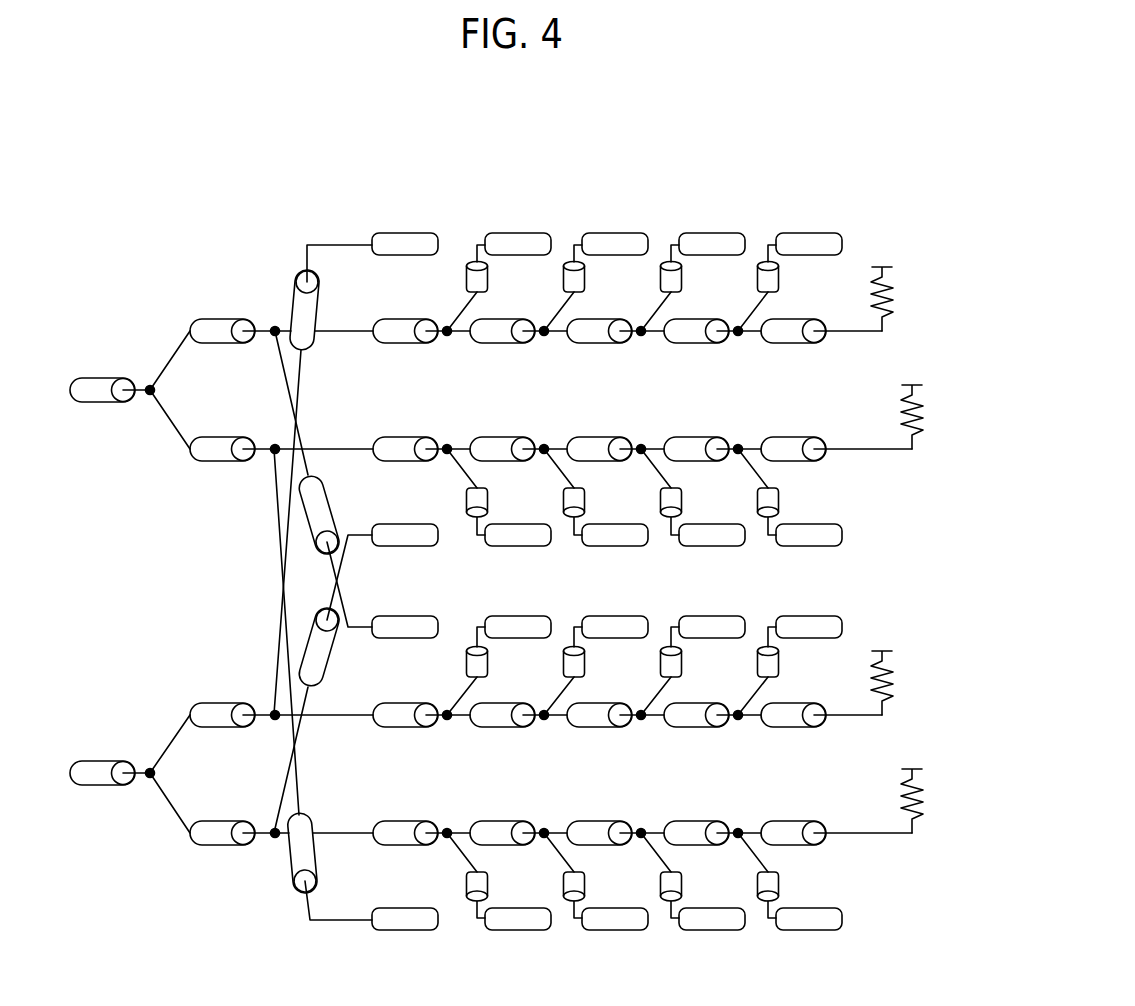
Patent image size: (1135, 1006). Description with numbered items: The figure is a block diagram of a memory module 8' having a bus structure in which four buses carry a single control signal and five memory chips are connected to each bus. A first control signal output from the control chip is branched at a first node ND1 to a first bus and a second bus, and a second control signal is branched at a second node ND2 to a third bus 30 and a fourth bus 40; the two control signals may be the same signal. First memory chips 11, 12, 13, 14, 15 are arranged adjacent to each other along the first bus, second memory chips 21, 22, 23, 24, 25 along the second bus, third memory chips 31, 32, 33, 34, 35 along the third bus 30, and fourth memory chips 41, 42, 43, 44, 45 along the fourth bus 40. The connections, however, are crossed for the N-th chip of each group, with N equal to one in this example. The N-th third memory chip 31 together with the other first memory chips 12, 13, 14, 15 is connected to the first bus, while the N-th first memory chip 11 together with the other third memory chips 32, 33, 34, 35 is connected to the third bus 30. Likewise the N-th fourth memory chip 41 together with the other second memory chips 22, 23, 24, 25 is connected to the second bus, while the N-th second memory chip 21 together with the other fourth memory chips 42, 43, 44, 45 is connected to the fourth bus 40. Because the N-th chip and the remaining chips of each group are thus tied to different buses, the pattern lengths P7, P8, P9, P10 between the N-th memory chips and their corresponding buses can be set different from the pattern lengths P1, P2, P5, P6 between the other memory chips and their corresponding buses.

The memory module 8' is at (904, 153).
The first node ND1 is at (137, 390).
The second node ND2 is at (137, 774).
The third bus 30 is at (843, 716).
The fourth bus 40 is at (870, 834).
The first memory chip 11 is at (407, 233).
The first memory chip 12 is at (517, 233).
The first memory chip 13 is at (614, 233).
The first memory chip 14 is at (709, 233).
The first memory chip 15 is at (809, 233).
The second memory chip 21 is at (400, 547).
The second memory chip 22 is at (515, 547).
The second memory chip 23 is at (612, 547).
The second memory chip 24 is at (707, 547).
The second memory chip 25 is at (805, 547).
The third memory chip 31 is at (400, 616).
The third memory chip 32 is at (515, 616).
The third memory chip 33 is at (612, 616).
The third memory chip 34 is at (707, 616).
The third memory chip 35 is at (805, 616).
The fourth memory chip 41 is at (407, 931).
The fourth memory chip 42 is at (517, 931).
The fourth memory chip 43 is at (614, 931).
The fourth memory chip 44 is at (709, 931).
The fourth memory chip 45 is at (809, 931).
The pattern length P1 is at (466, 276).
The pattern length P2 is at (466, 502).
The pattern length P5 is at (466, 662).
The pattern length P6 is at (466, 887).
The pattern length P7 is at (333, 492).
The pattern length P8 is at (317, 860).
The pattern length P9 is at (320, 296).
The pattern length P10 is at (333, 665).